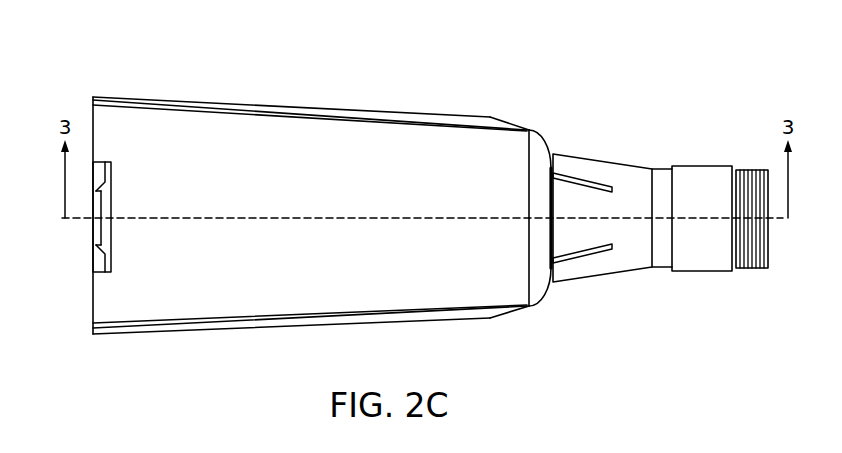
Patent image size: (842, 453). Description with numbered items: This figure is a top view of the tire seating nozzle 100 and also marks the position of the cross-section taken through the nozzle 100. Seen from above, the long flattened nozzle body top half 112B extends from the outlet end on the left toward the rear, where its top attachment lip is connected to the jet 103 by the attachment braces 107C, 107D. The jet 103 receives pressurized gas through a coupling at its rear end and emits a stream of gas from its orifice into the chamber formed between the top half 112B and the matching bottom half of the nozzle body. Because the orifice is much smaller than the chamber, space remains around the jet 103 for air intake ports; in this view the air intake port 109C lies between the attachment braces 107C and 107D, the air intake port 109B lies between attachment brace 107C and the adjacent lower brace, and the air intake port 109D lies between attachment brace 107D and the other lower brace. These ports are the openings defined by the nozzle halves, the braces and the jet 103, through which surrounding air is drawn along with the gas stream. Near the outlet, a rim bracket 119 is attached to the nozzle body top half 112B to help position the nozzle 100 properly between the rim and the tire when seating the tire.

The nozzle 100 is at (695, 85).
The jet 103 is at (632, 245).
The attachment brace 107C is at (580, 262).
The attachment brace 107D is at (583, 183).
The air intake port 109B is at (526, 326).
The air intake port 109C is at (575, 197).
The air intake port 109D is at (523, 113).
The nozzle body top half 112B is at (146, 302).
The rim bracket 119 is at (101, 262).